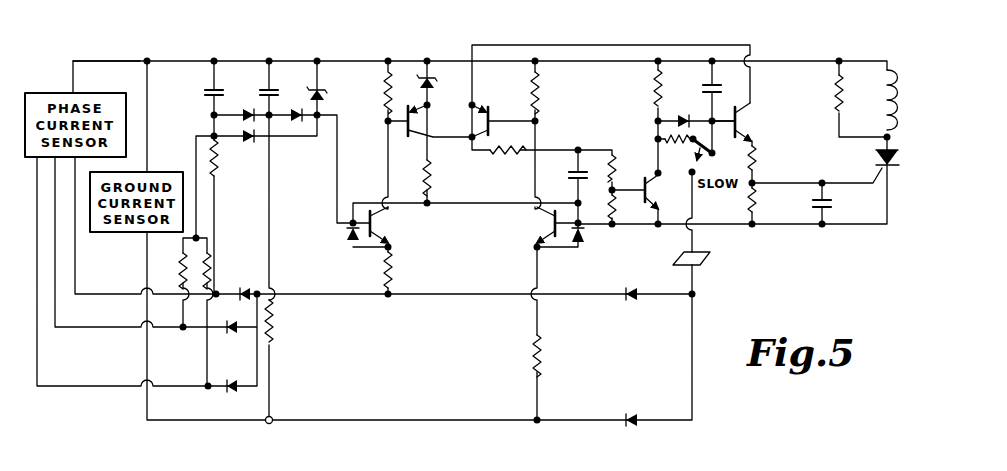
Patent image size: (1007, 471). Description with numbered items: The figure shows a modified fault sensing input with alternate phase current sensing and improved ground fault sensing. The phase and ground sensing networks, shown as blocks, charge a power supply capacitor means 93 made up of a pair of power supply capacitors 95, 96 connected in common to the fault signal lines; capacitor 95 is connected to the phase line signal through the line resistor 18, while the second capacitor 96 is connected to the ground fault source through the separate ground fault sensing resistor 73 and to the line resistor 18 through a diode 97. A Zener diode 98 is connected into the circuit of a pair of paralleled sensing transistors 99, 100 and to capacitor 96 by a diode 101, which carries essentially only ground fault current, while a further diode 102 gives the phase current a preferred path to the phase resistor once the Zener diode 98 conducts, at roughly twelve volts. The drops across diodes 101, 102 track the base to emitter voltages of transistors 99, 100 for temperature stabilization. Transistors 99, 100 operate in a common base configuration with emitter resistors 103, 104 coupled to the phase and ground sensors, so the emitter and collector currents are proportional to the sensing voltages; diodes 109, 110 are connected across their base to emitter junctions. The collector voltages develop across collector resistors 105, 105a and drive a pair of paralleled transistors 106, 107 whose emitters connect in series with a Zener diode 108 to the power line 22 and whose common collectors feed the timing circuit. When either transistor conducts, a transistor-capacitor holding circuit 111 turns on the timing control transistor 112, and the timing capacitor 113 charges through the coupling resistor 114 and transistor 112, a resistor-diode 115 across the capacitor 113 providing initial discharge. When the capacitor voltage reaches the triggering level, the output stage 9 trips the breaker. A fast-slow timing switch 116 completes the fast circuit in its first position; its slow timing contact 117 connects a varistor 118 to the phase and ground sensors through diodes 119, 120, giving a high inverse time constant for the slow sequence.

The power line 22 is at (364, 60).
The power supply capacitor 95 is at (205, 92).
The power supply capacitor means 93 is at (258, 92).
The power supply capacitor 96 is at (275, 88).
The Zener diode 98 is at (330, 92).
The diode 97 is at (243, 125).
The diode 101 is at (297, 122).
The diode 102 is at (250, 142).
The line resistor 18 is at (206, 152).
The ground fault sensing resistor 73 is at (275, 324).
The collector resistor 105 is at (386, 102).
The Zener diode 108 is at (433, 84).
The transistor 106 is at (414, 142).
The transistor 107 is at (487, 104).
The collector resistor 105a is at (541, 92).
The sensing transistor 99 is at (392, 222).
The diode 109 is at (353, 254).
The emitter resistor 103 is at (394, 268).
The sensing transistor 100 is at (546, 226).
The diode 110 is at (582, 252).
The emitter resistor 104 is at (545, 358).
The transistor-capacitor holding circuit 111 is at (606, 148).
The timing circuit control transistor 112 is at (650, 210).
The slow timing contact 117 is at (690, 176).
The resistor-diode 115 is at (684, 114).
The coupling resistor 114 is at (664, 140).
The fast-slow timing switch 116 is at (714, 160).
The capacitor 113 is at (722, 88).
The output circuit 9 is at (829, 162).
The varistor 118 is at (711, 258).
The diode 119 is at (632, 301).
The diode 120 is at (634, 411).